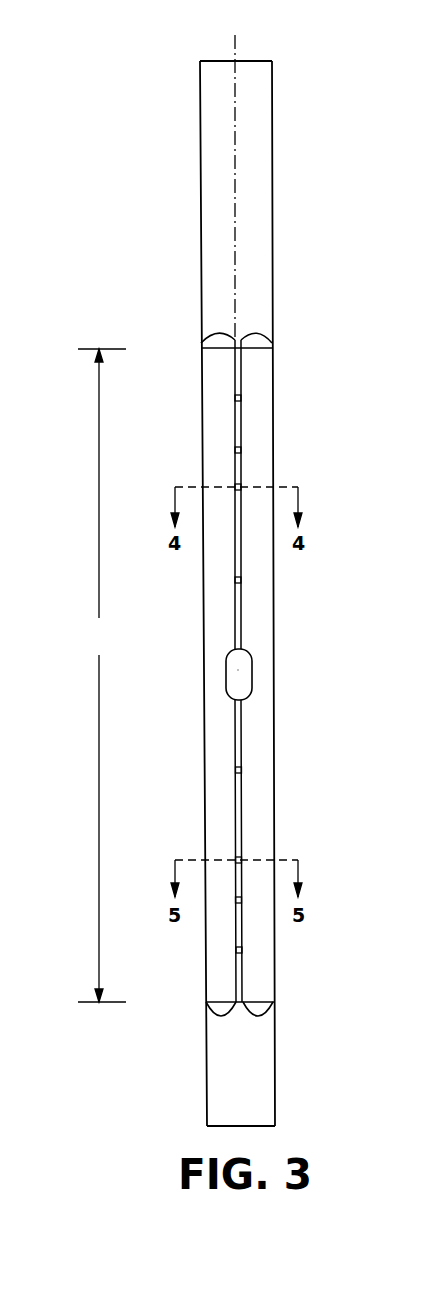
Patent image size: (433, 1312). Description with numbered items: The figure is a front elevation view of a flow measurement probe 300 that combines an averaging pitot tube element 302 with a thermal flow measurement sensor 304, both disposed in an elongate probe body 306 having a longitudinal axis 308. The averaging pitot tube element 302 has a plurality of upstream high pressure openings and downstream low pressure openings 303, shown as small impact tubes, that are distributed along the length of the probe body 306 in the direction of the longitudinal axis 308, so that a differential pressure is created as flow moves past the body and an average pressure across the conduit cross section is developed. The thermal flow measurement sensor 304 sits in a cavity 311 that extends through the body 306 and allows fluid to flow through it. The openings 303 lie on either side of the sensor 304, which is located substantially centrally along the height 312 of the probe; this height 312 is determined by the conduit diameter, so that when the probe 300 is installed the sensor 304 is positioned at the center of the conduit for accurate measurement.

The flow measurement probe 300 is at (144, 332).
The averaging pitot tube element 302 is at (250, 380).
The openings 303 is at (243, 400).
The thermal flow measurement sensor 304 is at (254, 675).
The elongate probe body 306 is at (272, 617).
The longitudinal axis 308 is at (236, 46).
The cavity 311 is at (238, 670).
The height 312 is at (102, 675).